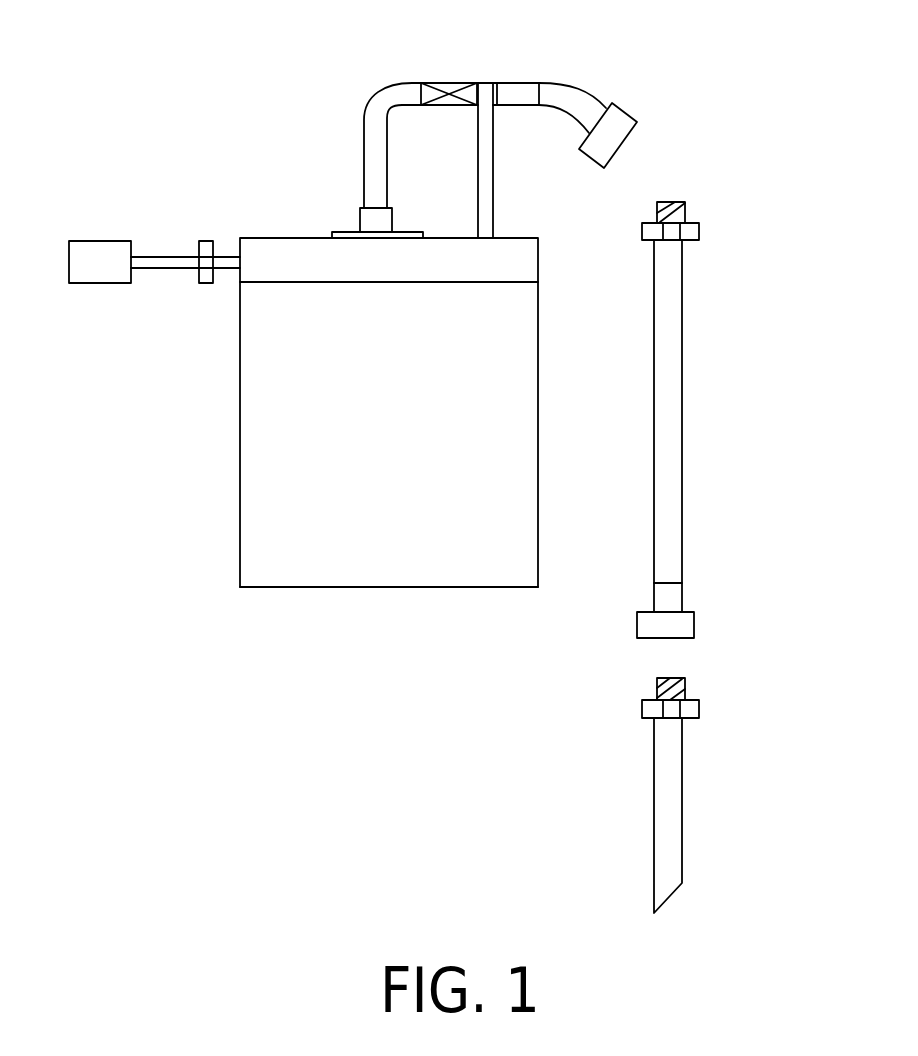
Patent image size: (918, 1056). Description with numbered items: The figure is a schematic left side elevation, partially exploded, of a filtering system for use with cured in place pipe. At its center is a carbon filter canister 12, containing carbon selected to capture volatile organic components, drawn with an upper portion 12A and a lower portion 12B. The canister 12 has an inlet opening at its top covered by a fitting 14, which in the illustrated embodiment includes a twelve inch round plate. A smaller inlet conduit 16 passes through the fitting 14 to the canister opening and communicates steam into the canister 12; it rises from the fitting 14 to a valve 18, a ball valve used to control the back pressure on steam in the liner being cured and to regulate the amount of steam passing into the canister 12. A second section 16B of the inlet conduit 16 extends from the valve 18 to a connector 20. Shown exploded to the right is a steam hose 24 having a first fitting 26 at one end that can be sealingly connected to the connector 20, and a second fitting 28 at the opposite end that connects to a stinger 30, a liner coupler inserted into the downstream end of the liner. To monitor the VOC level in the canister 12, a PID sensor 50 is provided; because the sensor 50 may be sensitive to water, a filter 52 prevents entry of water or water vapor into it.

The carbon filter canister 12 is at (192, 440).
The upper portion of tank 12A is at (271, 249).
The lower portion of tank 12B is at (239, 557).
The fitting 14 is at (360, 222).
The inlet conduit 16 is at (407, 75).
The second section of the inlet conduit 16B is at (521, 83).
The valve 18 is at (452, 83).
The connector 20 is at (622, 118).
The steam hose 24 is at (682, 447).
The first fitting 26 is at (683, 214).
The second fitting 28 is at (694, 627).
The stinger 30 is at (682, 792).
The PID sensor 50 is at (100, 241).
The filter 52 is at (209, 283).